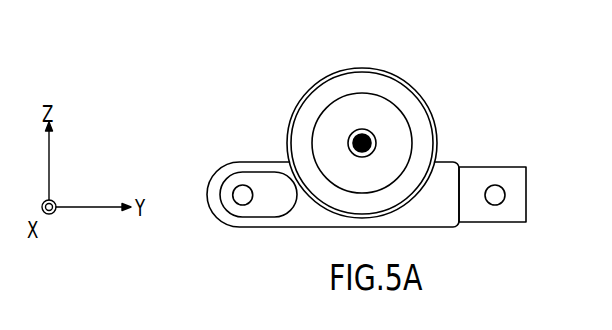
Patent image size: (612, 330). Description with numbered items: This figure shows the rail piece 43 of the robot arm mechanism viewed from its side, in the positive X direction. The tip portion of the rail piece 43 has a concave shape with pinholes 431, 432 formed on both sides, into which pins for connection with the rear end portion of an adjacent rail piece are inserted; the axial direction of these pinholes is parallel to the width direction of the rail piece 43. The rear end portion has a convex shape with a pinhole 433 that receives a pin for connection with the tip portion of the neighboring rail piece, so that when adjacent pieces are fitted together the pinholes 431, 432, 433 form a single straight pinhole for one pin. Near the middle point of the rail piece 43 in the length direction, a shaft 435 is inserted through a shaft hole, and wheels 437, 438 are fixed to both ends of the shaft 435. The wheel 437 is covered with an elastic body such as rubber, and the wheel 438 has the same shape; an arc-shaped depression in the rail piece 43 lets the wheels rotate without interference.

The rail piece 43 is at (321, 63).
The pinhole 431 is at (239, 174).
The pinhole 432 is at (238, 186).
The pinhole 433 is at (492, 185).
The shaft 435 is at (371, 136).
The wheel 437 is at (377, 123).
The wheel 438 is at (403, 78).